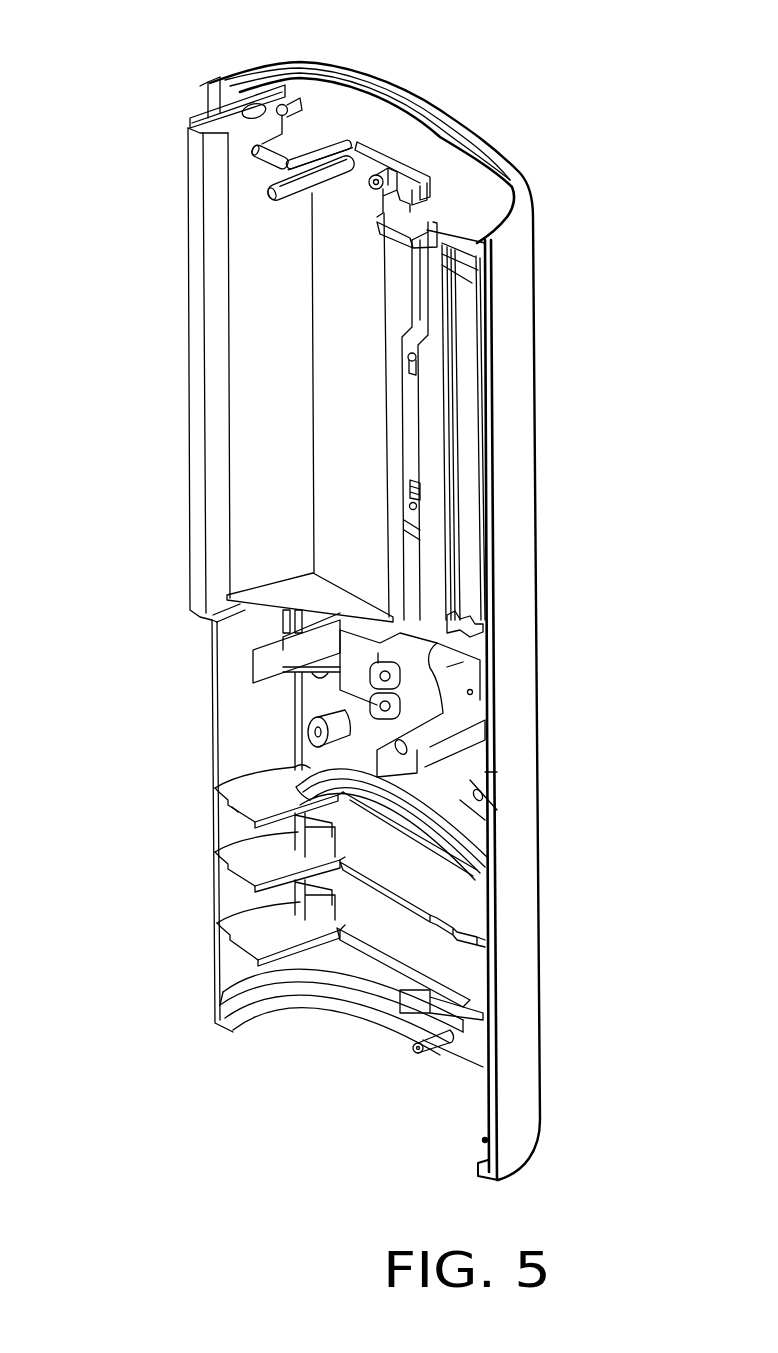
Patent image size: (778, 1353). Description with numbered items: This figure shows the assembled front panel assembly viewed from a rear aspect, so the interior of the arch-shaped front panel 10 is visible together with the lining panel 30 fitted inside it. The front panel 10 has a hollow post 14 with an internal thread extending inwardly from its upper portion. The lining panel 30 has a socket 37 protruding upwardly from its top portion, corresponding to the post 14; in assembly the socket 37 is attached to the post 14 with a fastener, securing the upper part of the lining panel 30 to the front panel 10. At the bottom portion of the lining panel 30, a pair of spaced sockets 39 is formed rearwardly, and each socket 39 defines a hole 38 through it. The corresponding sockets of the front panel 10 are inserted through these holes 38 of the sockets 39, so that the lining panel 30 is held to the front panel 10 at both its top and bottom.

The front panel 10 is at (555, 587).
The hollow post 14 is at (307, 93).
The lining panel 30 is at (177, 530).
The socket 37 is at (277, 105).
The hole 38 is at (497, 772).
The sockets 39 is at (497, 810).